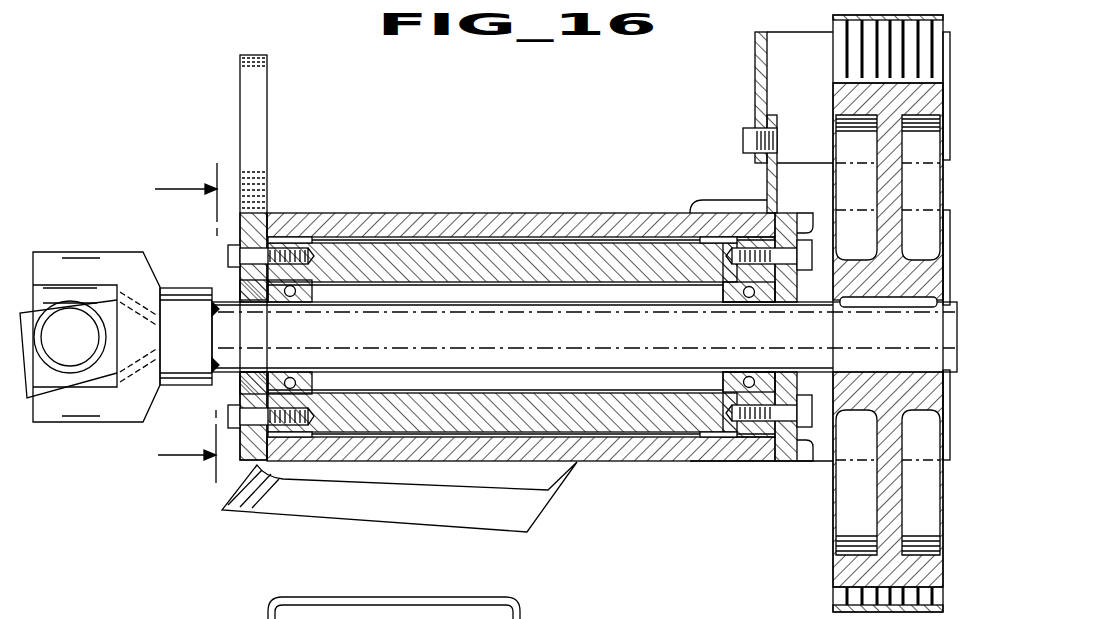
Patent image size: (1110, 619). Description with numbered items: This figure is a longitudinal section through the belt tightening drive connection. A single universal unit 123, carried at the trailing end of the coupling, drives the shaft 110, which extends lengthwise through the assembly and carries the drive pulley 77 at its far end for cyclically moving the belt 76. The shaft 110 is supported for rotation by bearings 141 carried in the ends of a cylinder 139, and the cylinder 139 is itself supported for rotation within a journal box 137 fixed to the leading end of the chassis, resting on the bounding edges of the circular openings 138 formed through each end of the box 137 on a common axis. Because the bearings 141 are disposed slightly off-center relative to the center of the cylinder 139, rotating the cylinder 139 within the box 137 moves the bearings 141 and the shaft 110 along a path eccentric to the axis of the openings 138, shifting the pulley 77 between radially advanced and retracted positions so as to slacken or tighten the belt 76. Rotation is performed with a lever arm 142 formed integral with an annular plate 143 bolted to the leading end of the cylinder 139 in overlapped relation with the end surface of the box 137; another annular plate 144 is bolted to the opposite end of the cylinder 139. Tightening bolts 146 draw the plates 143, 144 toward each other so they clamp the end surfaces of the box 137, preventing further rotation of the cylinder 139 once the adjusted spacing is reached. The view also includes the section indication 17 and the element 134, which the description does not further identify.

The drive shaft 110 is at (528, 341).
The universal unit 123 is at (107, 270).
The lever arm 142 is at (240, 110).
The annular plate 143 is at (245, 463).
The journal box 137 is at (517, 213).
The cylinder 139 is at (457, 262).
The circular openings 138 is at (303, 240).
The bearings 141 is at (313, 293).
The annular plate 144 is at (813, 445).
The tightening bolts 146 is at (290, 422).
The housing 134 is at (427, 597).
The belt 76 is at (832, 15).
The drive pulley 77 is at (833, 125).
The section line 17- 17 is at (186, 322).